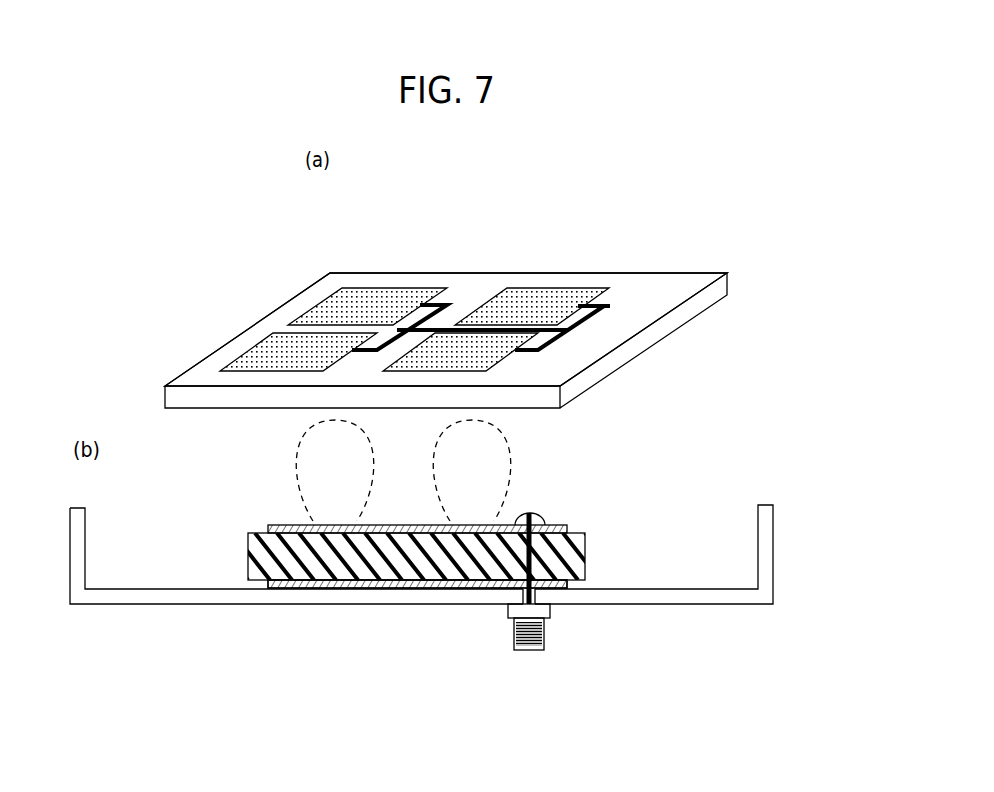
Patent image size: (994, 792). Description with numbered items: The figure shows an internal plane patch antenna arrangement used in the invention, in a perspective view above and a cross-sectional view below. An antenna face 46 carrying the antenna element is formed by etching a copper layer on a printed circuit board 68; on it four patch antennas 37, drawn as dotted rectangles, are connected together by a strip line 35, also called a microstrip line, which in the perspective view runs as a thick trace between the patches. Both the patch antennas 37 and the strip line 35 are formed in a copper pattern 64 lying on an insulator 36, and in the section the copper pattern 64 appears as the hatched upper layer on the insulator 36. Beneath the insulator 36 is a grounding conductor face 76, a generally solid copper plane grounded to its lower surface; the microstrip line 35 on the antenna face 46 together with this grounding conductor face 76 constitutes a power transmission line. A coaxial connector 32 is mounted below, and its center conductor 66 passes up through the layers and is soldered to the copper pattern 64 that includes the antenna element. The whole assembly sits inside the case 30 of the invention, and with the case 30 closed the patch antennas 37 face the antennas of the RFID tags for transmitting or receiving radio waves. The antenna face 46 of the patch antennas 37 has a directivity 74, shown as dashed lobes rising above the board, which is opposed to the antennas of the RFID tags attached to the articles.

The patch antenna 37 is at (495, 312).
The printed circuit board 68 is at (265, 328).
The antenna face 46 is at (653, 307).
The strip line 35 is at (567, 331).
The copper pattern 64 is at (275, 525).
The directivity 74 is at (503, 482).
The insulator 36 is at (257, 555).
The center conductor 66 is at (540, 553).
The grounding conductor face 76 is at (313, 588).
The coaxial connector 32 is at (514, 640).
The case 30 is at (632, 600).